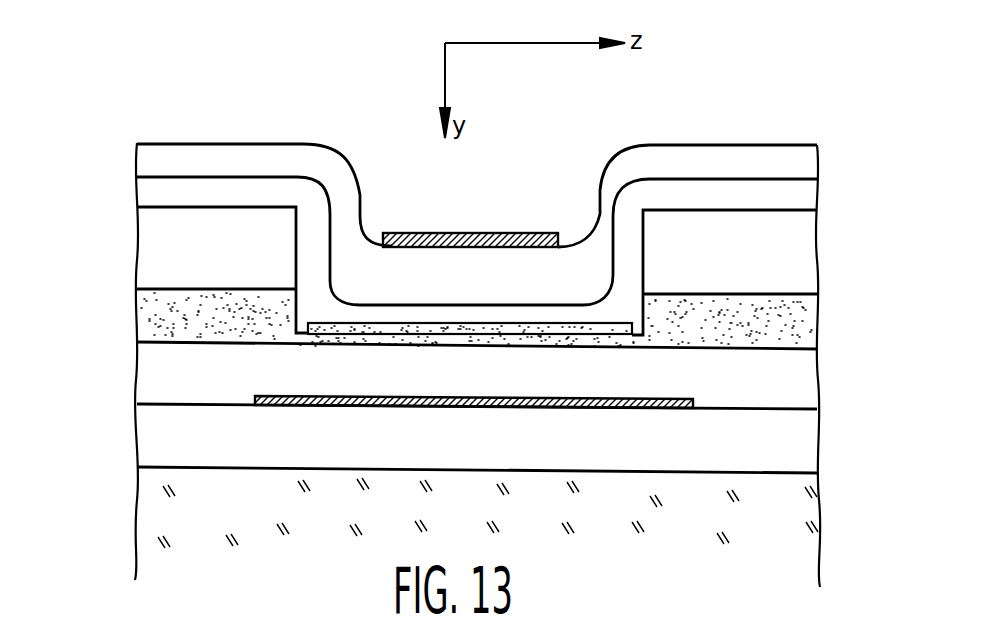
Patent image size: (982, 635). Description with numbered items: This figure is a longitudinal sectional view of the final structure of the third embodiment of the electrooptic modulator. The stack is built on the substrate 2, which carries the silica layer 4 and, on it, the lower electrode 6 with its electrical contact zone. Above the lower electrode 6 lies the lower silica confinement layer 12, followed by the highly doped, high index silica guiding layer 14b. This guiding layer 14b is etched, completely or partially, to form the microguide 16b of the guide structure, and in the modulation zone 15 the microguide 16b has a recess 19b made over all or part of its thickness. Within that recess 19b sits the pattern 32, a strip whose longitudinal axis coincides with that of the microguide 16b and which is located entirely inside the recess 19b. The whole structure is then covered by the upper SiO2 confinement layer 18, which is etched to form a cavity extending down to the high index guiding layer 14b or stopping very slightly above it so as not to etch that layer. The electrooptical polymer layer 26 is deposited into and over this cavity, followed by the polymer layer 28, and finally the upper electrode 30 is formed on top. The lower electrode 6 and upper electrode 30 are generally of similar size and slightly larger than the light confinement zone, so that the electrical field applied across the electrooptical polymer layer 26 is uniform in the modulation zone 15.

The substrate 2 is at (153, 518).
The silica layer 4 is at (152, 442).
The lower electrode 6 is at (665, 398).
The lower silica confinement layer 12 is at (160, 378).
The highly doped silica guiding layer 14b is at (152, 320).
The modulation zone 15 is at (522, 210).
The microguide 16b is at (158, 282).
The upper SiO2 confinement layer 18 is at (793, 255).
The recess 19b is at (298, 306).
The electrooptical polymer layer 26 is at (142, 192).
The polymer layer 28 is at (140, 158).
The upper electrode 30 is at (445, 233).
The pattern 32 is at (320, 326).